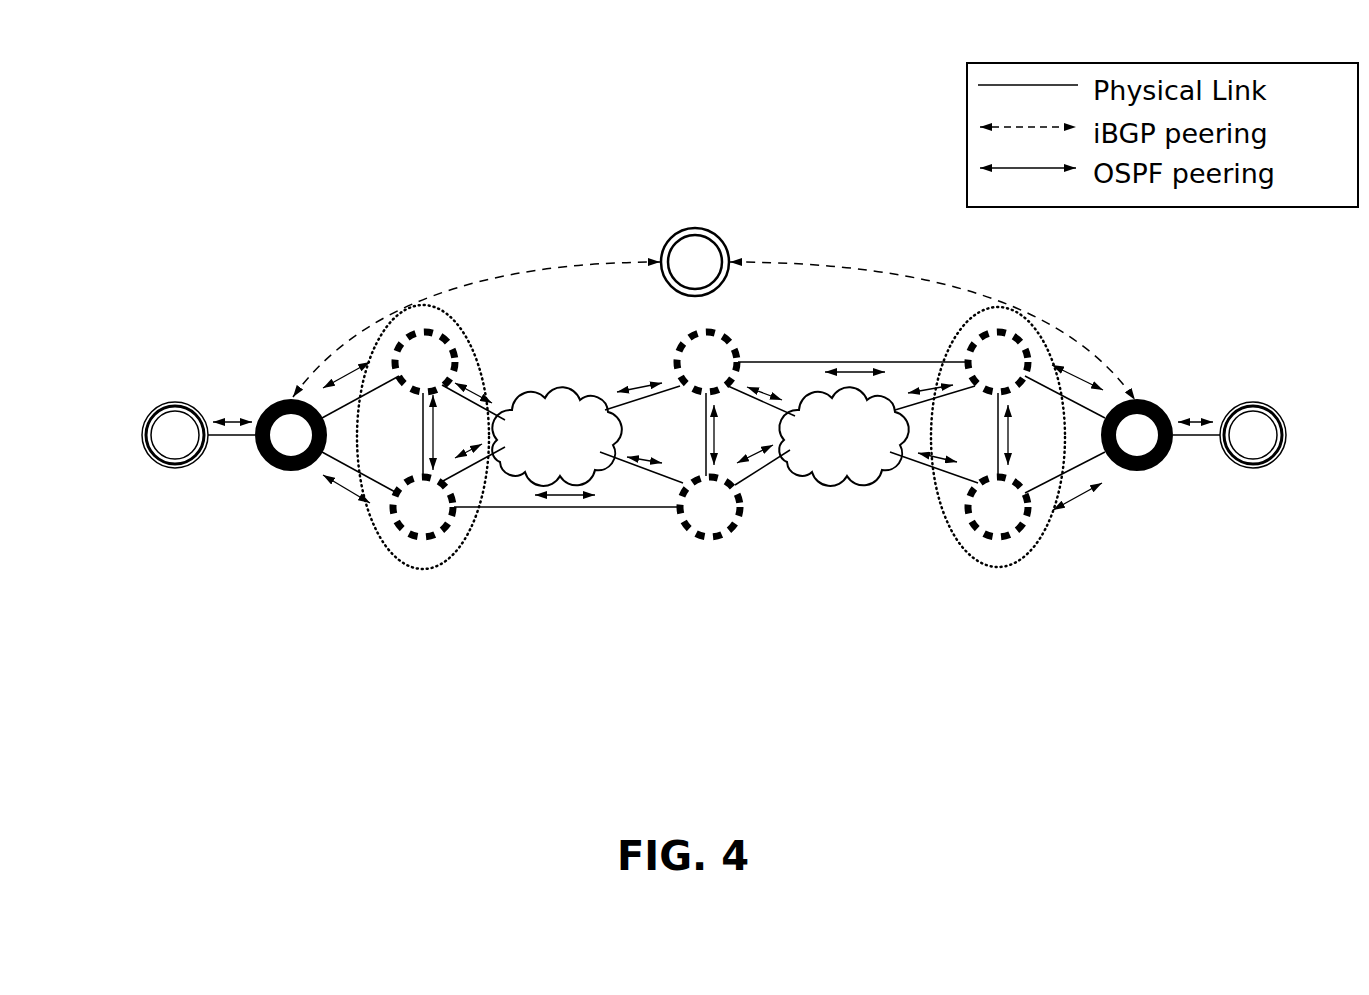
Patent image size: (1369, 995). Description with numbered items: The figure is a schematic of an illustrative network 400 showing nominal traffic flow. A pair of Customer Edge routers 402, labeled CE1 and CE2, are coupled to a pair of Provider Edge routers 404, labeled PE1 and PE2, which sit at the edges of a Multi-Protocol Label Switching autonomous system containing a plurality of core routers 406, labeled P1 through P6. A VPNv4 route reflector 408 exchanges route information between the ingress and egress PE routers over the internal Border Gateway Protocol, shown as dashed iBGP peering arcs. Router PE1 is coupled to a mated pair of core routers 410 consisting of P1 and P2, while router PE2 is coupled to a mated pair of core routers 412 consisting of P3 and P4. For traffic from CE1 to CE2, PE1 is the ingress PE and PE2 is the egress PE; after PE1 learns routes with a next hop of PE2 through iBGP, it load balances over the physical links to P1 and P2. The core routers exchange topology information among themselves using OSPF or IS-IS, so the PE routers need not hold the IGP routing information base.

The network 400 is at (828, 127).
The Customer Edge (CE) routers 402 is at (162, 402).
The Provider Edge (PE) routers 404 is at (283, 402).
The core routers 406 is at (967, 340).
The VPNv4 route reflector 408 is at (670, 243).
The mated pair of core routers (P1, P2) 410 is at (378, 527).
The mated pair of core routers (P3, P4) 412 is at (1038, 547).